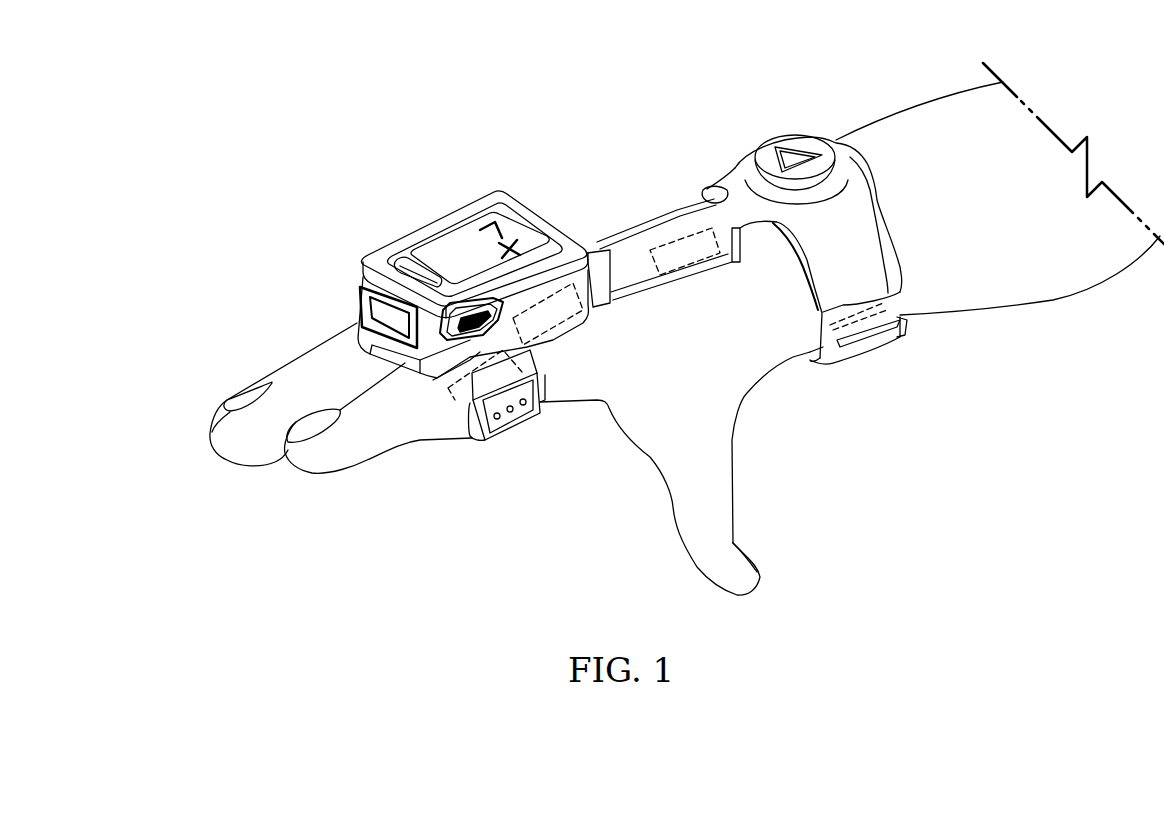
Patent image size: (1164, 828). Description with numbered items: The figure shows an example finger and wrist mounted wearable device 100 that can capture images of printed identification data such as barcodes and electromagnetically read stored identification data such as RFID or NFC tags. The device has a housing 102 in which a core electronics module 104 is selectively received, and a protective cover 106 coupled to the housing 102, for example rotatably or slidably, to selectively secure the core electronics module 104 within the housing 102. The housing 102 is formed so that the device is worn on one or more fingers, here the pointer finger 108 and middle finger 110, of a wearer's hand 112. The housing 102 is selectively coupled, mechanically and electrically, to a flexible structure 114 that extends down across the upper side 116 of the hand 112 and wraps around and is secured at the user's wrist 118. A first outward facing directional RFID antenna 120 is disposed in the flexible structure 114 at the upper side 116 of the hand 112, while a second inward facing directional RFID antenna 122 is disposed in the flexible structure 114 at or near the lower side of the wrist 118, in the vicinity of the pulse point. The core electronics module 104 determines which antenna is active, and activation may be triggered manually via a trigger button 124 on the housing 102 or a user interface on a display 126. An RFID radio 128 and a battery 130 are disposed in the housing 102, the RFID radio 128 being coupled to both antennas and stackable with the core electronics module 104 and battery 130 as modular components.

The wearable device 100 is at (323, 168).
The housing 102 is at (470, 310).
The core electronics module 104 is at (501, 208).
The protective cover 106 is at (371, 270).
The pointer finger 108 is at (312, 473).
The middle finger 110 is at (218, 420).
The hand 112 is at (548, 525).
The flexible structure 114 is at (727, 180).
The upper side 116 is at (694, 212).
The wrist 118 is at (845, 284).
The first outward facing directional RFID antenna 120 is at (673, 245).
The second inward facing directional RFID antenna 122 is at (870, 338).
The trigger button 124 is at (512, 418).
The display 126 is at (468, 225).
The RFID radio 128 is at (466, 432).
The battery 130 is at (560, 290).